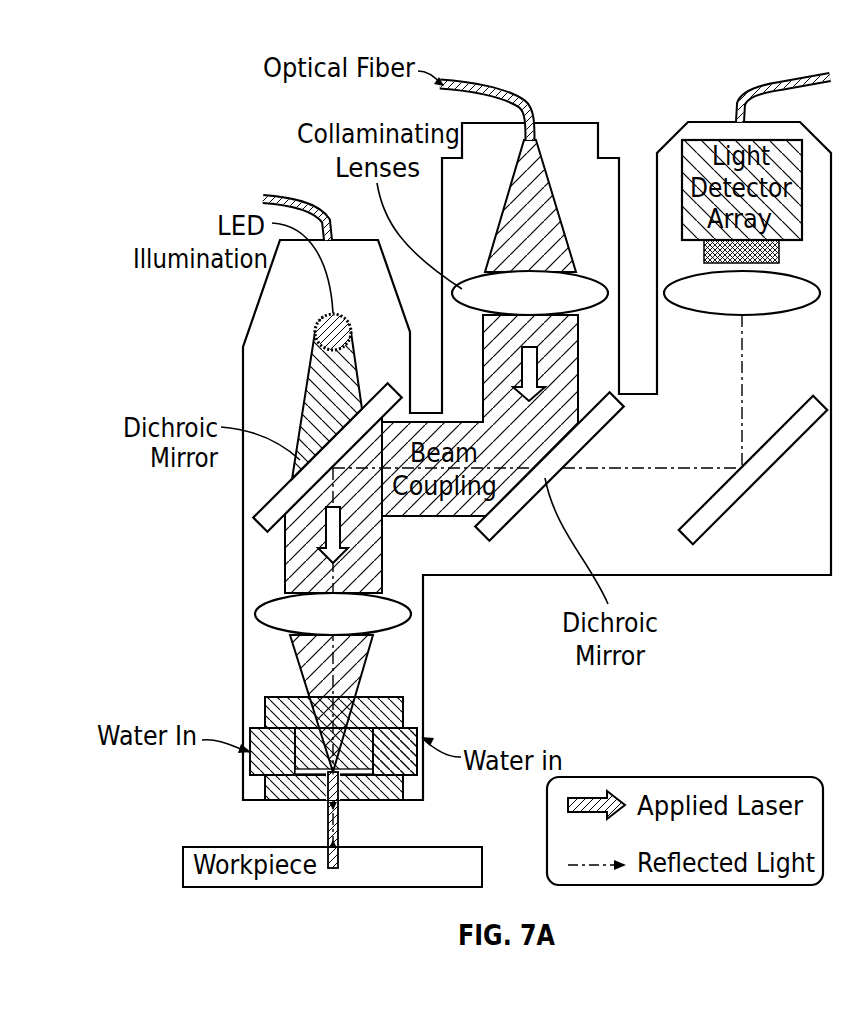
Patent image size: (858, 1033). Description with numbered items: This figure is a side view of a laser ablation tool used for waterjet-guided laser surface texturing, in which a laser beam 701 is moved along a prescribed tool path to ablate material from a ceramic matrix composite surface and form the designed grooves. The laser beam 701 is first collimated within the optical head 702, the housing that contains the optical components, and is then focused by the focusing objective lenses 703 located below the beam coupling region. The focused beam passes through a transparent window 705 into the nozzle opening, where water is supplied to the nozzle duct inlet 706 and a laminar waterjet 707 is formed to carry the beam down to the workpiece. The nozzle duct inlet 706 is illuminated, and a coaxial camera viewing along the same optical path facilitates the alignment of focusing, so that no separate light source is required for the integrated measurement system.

The laser beam 701 is at (312, 387).
The optical head 702 is at (248, 322).
The focusing objective lenses 703 is at (270, 603).
The transparent window 705 is at (293, 715).
The nozzle duct inlet 706 is at (416, 729).
The laminar waterjet 707 is at (327, 832).